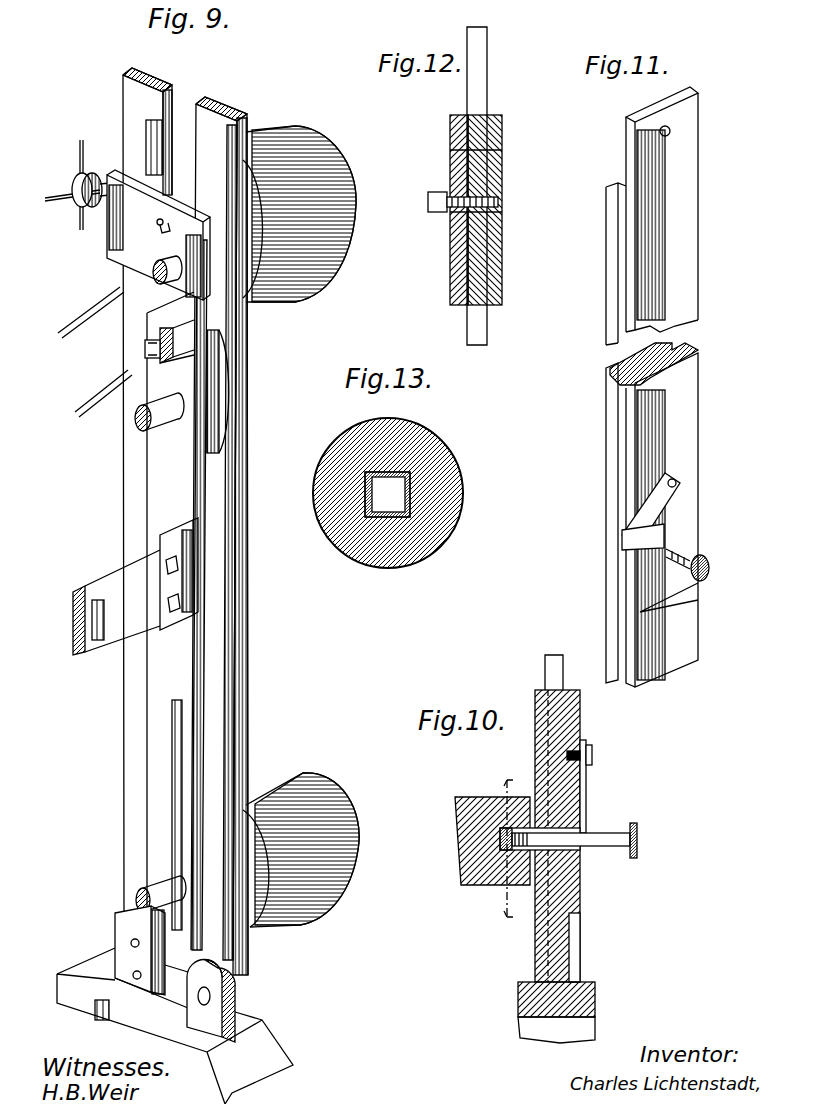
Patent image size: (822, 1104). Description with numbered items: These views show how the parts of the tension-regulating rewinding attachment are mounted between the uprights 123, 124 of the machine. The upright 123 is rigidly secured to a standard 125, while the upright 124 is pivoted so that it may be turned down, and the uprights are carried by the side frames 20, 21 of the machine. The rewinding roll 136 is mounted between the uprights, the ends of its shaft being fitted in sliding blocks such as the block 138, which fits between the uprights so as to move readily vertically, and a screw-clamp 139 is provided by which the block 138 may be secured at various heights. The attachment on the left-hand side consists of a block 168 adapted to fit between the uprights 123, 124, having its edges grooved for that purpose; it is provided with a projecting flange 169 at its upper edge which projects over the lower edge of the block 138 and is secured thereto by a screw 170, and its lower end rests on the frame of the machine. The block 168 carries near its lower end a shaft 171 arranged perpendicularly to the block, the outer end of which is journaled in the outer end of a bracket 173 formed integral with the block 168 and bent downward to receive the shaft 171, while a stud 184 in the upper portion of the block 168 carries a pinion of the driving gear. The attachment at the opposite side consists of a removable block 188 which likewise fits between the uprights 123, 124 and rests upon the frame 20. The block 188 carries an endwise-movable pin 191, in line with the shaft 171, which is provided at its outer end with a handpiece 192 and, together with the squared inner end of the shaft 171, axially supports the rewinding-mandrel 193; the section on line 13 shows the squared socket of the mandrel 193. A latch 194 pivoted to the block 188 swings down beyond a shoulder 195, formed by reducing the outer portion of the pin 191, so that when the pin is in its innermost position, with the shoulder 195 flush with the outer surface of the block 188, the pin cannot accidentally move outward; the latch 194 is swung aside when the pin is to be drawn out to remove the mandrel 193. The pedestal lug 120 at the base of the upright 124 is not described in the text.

In FIG. 9, the upright 123 is at (133, 494).
In FIG. 12, the upright 123 is at (480, 90).
In FIG. 10, the upright 123 is at (545, 668).
In FIG. 9, the upright 124 is at (228, 492).
In FIG. 9, the rewinding roll 136 is at (318, 140).
In FIG. 9, the sliding block 138 is at (130, 245).
In FIG. 12, the sliding block 138 is at (450, 134).
In FIG. 9, the screw-clamp 139 is at (76, 177).
In FIG. 9, the block 168 is at (172, 687).
In FIG. 9, the projecting flange 169 is at (156, 336).
In FIG. 12, the projecting flange 169 is at (455, 218).
In FIG. 9, the screw 170 is at (148, 360).
In FIG. 12, the screw 170 is at (428, 202).
In FIG. 9, the shaft 171 is at (136, 890).
In FIG. 9, the bracket 173 is at (110, 595).
In FIG. 9, the stud 184 is at (160, 435).
In FIG. 9, the block 188 is at (212, 352).
In FIG. 11, the block 188 is at (692, 425).
In FIG. 10, the block 188 is at (582, 718).
In FIG. 11, the endwise-movable pin 191 is at (678, 590).
In FIG. 10, the endwise-movable pin 191 is at (580, 832).
In FIG. 11, the handpiece 192 is at (708, 575).
In FIG. 10, the handpiece 192 is at (640, 844).
In FIG. 9, the rewinding-mandrel 193 is at (316, 880).
In FIG. 13, the rewinding-mandrel 193 is at (352, 540).
In FIG. 11, the latch 194 is at (660, 535).
In FIG. 10, the latch 194 is at (584, 810).
In FIG. 11, the shoulder 195 is at (676, 556).
In FIG. 10, the shoulder 195 is at (582, 850).
In FIG. 9, the pedestal lug 120 is at (238, 1008).
In FIG. 9, the standard 125 is at (120, 967).
In FIG. 9, the side frame 21 is at (96, 972).
In FIG. 10, the side frame 20 is at (540, 1026).
In FIG. 10, the section line 13 is at (507, 937).